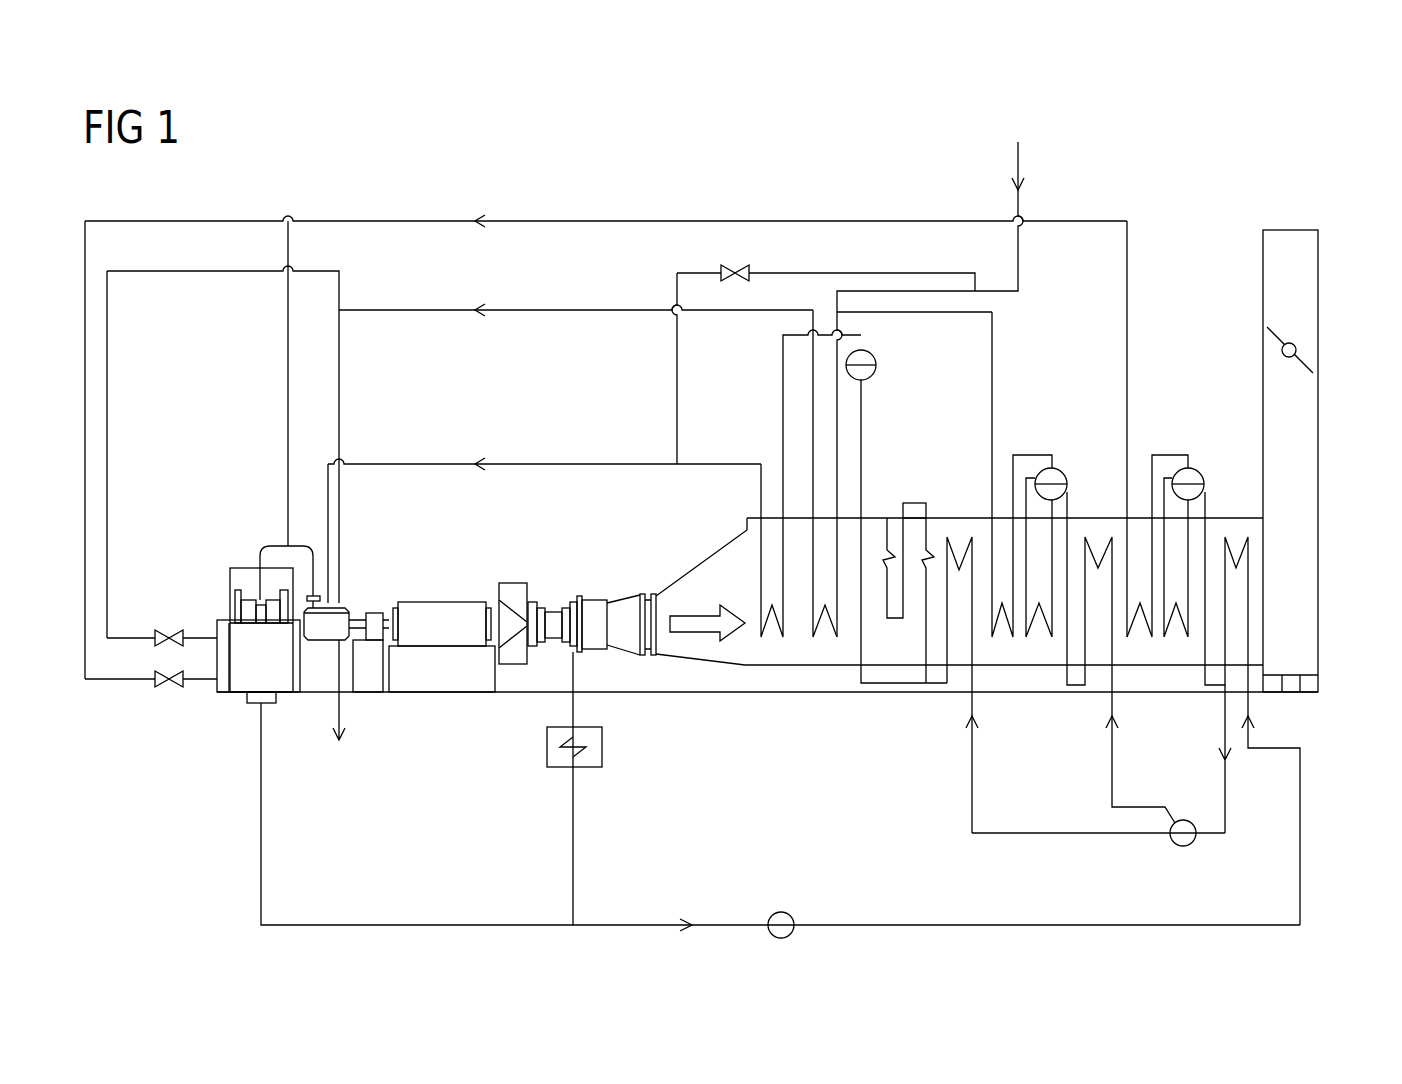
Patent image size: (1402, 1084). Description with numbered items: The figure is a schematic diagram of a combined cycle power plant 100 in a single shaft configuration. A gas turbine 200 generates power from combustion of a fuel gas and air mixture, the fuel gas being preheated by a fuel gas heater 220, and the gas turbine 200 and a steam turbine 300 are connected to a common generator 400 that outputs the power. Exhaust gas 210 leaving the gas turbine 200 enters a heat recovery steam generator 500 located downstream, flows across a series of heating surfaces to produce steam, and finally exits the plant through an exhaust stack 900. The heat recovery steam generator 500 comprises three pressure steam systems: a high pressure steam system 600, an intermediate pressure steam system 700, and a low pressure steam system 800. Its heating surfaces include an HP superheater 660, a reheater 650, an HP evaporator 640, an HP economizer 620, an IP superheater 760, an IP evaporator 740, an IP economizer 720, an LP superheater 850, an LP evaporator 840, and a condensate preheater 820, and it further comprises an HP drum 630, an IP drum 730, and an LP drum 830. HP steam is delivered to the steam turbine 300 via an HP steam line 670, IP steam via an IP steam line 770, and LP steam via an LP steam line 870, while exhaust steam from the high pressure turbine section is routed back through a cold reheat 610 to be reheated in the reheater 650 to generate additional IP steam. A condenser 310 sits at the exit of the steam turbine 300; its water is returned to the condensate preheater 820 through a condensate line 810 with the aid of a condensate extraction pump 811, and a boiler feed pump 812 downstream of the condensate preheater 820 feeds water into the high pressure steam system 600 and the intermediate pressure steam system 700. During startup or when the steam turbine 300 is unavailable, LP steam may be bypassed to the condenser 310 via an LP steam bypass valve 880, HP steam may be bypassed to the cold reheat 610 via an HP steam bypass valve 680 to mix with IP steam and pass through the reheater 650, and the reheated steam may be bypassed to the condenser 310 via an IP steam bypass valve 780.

The combined cycle power plant 100 is at (1212, 90).
The gas turbine 200 is at (578, 587).
The exhaust gas 210 is at (696, 612).
The fuel gas heater 220 is at (602, 746).
The steam turbine 300 is at (252, 543).
The condenser 310 is at (249, 705).
The generator 400 is at (443, 585).
The heat recovery steam generator 500 is at (1103, 195).
The high pressure steam system 600 is at (922, 406).
The cold reheat 610 is at (1020, 166).
The HP economizer 620 is at (958, 540).
The HP drum 630 is at (874, 357).
The HP evaporator 640 is at (918, 503).
The reheater 650 is at (823, 640).
The HP superheater 660 is at (771, 640).
The HP steam line 670 is at (566, 460).
The HP steam bypass valve 680 is at (740, 272).
The intermediate pressure steam system 700 is at (1039, 428).
The IP economizer 720 is at (1098, 540).
The IP drum 730 is at (1063, 470).
The IP evaporator 740 is at (1040, 640).
The IP superheater 760 is at (1001, 640).
The IP steam line 770 is at (566, 305).
The IP steam bypass valve 780 is at (168, 630).
The low pressure steam system 800 is at (1176, 428).
The condensate line 810 is at (468, 920).
The condensate extraction pump 811 is at (778, 912).
The boiler feed pump 812 is at (1190, 846).
The condensate preheater 820 is at (1236, 540).
The LP drum 830 is at (1200, 470).
The LP evaporator 840 is at (1177, 640).
The LP superheater 850 is at (1139, 640).
The LP steam line 870 is at (566, 216).
The LP steam bypass valve 880 is at (168, 690).
The exhaust stack 900 is at (1318, 254).